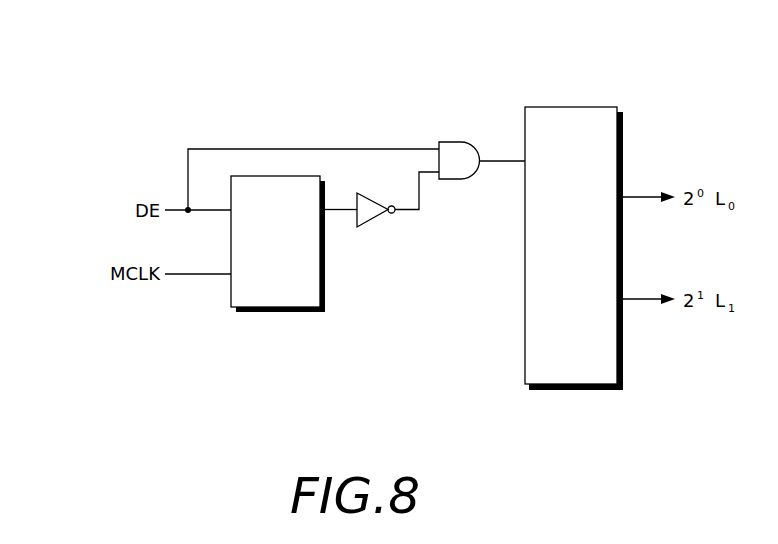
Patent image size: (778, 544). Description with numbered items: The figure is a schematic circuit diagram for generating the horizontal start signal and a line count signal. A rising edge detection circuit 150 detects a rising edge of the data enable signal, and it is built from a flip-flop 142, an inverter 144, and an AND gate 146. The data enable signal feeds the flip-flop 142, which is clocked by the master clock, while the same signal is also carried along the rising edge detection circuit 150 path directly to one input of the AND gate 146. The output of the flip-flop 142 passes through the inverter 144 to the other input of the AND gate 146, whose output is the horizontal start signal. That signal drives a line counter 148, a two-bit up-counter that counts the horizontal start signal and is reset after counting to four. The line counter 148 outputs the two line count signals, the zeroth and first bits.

The flip-flop 142 is at (277, 313).
The inverter 144 is at (372, 191).
The AND gate 146 is at (447, 138).
The line counter 148 is at (568, 104).
The rising edge detection circuit 150 is at (320, 143).